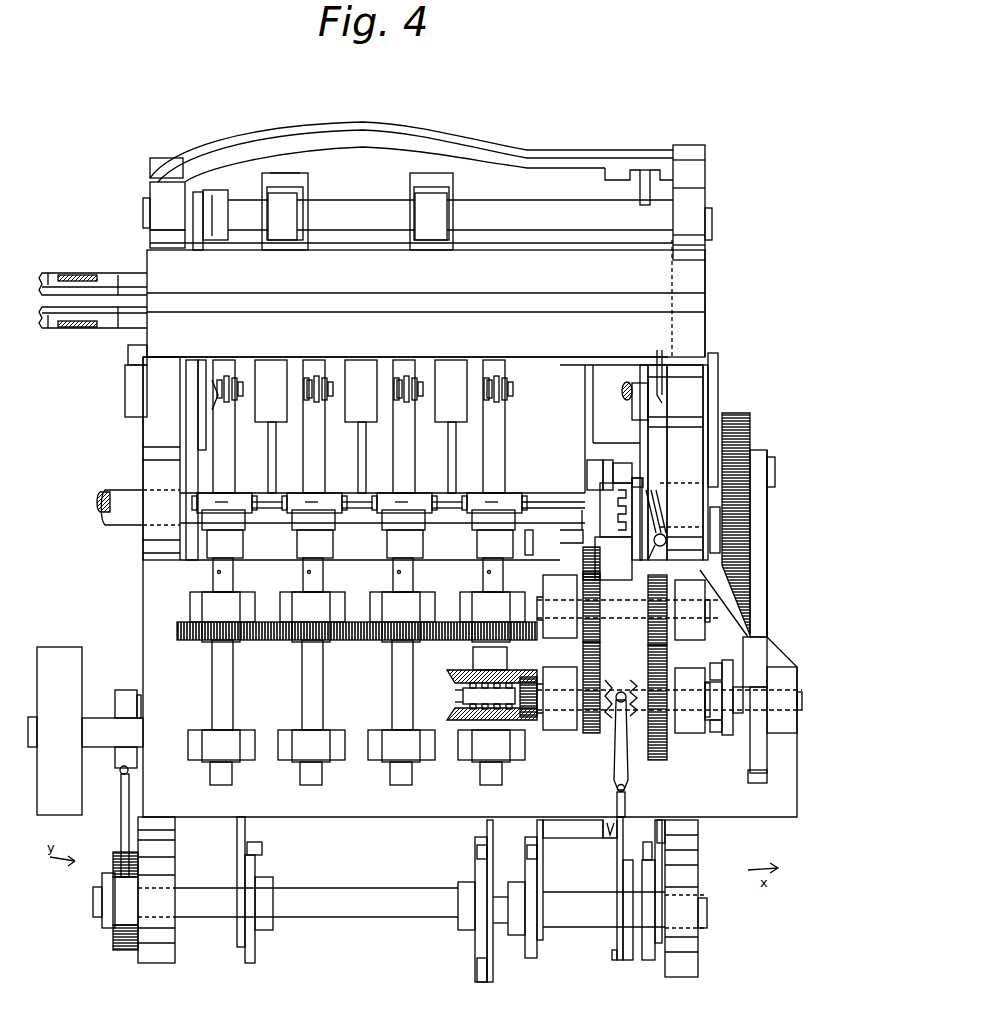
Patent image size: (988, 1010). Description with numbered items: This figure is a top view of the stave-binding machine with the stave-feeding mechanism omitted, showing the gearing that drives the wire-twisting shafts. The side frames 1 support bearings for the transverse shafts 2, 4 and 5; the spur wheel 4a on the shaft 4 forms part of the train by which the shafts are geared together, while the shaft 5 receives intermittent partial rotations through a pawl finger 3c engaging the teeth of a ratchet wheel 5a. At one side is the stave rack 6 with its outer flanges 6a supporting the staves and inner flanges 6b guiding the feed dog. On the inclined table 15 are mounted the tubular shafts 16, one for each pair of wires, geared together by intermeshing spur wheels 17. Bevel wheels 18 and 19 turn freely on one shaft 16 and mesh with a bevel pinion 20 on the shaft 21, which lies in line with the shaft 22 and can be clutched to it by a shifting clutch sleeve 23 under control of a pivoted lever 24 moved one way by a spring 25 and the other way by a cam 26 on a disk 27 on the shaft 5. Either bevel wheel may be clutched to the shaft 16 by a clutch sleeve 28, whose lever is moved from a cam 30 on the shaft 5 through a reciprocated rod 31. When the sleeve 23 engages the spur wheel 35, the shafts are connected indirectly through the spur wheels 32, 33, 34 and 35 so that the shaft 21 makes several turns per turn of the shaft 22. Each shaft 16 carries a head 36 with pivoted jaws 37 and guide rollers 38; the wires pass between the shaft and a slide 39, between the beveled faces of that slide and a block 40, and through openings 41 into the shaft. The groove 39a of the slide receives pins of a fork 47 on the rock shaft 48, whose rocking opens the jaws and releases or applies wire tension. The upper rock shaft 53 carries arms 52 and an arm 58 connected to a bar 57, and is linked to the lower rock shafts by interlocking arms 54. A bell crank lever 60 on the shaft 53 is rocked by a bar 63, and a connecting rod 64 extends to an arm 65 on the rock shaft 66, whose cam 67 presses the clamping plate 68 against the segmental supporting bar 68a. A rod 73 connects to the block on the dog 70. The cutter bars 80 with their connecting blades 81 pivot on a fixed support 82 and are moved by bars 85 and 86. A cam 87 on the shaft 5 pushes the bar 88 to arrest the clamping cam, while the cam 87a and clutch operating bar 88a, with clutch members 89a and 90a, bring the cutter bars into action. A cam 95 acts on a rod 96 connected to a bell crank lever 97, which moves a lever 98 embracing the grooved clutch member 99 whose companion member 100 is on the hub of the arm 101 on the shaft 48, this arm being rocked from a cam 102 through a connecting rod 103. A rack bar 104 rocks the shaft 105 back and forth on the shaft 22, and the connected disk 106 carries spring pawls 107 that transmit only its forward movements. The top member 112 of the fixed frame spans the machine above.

The side frames 1 is at (710, 964).
The transverse shaft 2 is at (85, 731).
The pawl finger 3c is at (121, 826).
The transverse shaft 4 is at (120, 507).
The spur wheel 4a is at (742, 522).
The transverse shaft 5 is at (93, 902).
The ratchet wheel 5a is at (118, 932).
The stave rack 6 is at (78, 275).
The outer flanges 6a is at (46, 300).
The inner flanges 6b is at (118, 300).
The table 15 is at (470, 538).
The tubular shaft 16 is at (482, 775).
The spur wheels 17 is at (192, 640).
The bevel wheel 18 is at (450, 678).
The bevel wheel 19 is at (450, 714).
The bevel pinion 20 is at (533, 676).
The shaft 21 is at (572, 730).
The shaft 22 is at (670, 730).
The shifting clutch sleeve 23 is at (618, 680).
The pivoted lever 24 is at (618, 805).
The spring 25 is at (606, 842).
The cam 26 is at (615, 962).
The disk 27 is at (628, 921).
The clutch sleeve 28 is at (458, 695).
The cam 30 is at (472, 930).
The reciprocated rod 31 is at (490, 880).
The spur wheel 32 is at (591, 733).
The spur wheel 33 is at (600, 583).
The spur wheel 34 is at (650, 631).
The spur wheel 35 is at (667, 660).
The head 36 is at (243, 390).
The jaws 37 is at (313, 371).
The guide rollers 38 is at (526, 386).
The slide 39 is at (359, 511).
The groove 39a is at (228, 505).
The block 40 is at (360, 544).
The openings 41 is at (222, 573).
The fork 47 is at (357, 506).
The rock shaft 48 is at (553, 509).
The arms 52 is at (651, 373).
The upper rock shaft 53 is at (125, 392).
The interlocking arms 54 is at (128, 356).
The bar 57 is at (700, 470).
The arm 58 is at (752, 436).
The bell crank lever 60 is at (205, 402).
The bar 63 is at (192, 478).
The connecting rod 64 is at (200, 213).
The arm 65 is at (212, 213).
The rock shaft 66 is at (450, 215).
The cam 67 is at (357, 216).
The clamping plate 68 is at (308, 189).
The segmental supporting bar 68a is at (287, 186).
The dog 70 is at (361, 391).
The rod 73 is at (276, 439).
The cutter bars 80 is at (258, 133).
The connecting blades 81 is at (395, 165).
The fixed support 82 is at (162, 158).
The bar 85 is at (616, 387).
The bar 86 is at (640, 189).
The cam 87 is at (255, 950).
The cam 87a is at (532, 950).
The bar 88 is at (238, 834).
The clutch operating bar 88a is at (543, 872).
The clutch member 89a is at (576, 555).
The clutch member 90a is at (578, 516).
The cam 95 is at (650, 960).
The rod 96 is at (676, 565).
The bell crank lever 97 is at (653, 531).
The lever 98 is at (640, 478).
The grooved clutch member 99 is at (623, 473).
The clutch member 100 is at (618, 529).
The arm 101 is at (621, 468).
The cam 102 is at (775, 470).
The connecting rod 103 is at (588, 468).
The rack bar 104 is at (764, 580).
The shaft 105 is at (738, 713).
The disk 106 is at (727, 735).
The spring pawls 107 is at (714, 665).
The top member 112 is at (426, 300).